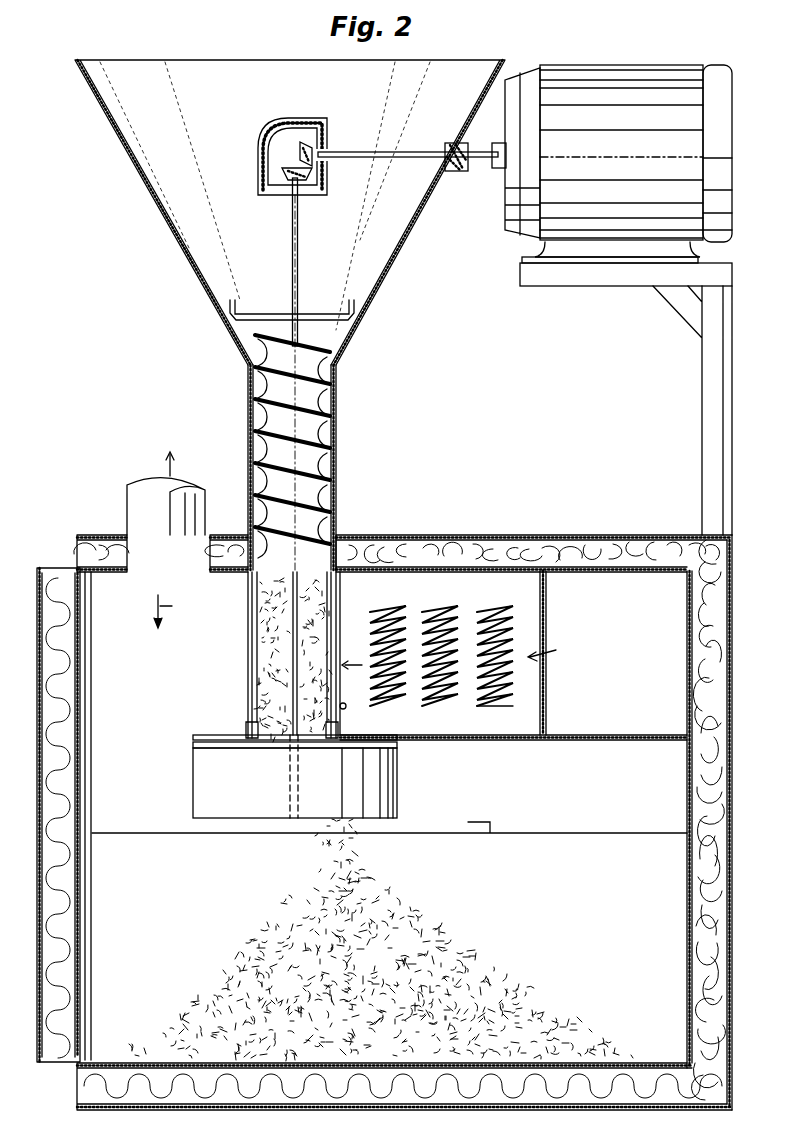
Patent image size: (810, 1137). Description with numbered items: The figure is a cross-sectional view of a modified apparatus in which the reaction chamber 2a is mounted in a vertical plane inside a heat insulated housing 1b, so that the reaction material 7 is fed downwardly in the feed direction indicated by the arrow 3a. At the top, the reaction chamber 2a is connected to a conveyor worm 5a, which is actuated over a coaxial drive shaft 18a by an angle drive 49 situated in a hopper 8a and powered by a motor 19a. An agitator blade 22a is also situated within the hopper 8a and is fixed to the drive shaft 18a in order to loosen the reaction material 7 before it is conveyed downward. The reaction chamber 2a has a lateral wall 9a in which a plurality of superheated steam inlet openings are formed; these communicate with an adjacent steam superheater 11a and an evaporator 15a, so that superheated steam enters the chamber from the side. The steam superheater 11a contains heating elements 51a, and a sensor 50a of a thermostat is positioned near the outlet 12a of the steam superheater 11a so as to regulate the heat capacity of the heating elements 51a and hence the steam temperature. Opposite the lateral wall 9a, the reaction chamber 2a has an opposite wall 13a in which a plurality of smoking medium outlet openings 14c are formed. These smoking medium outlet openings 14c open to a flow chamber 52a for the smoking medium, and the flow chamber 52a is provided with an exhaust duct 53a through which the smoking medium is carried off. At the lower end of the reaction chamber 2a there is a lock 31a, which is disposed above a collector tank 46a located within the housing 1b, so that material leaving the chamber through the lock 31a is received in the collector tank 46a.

The heat insulated housing 1b is at (494, 528).
The reaction chamber 2a is at (242, 614).
The arrow 3a is at (176, 611).
The conveyor worm 5a is at (318, 458).
The reaction material 7 is at (270, 640).
The hopper 8a is at (396, 268).
The lateral wall 9a is at (345, 652).
The steam superheater 11a is at (420, 590).
The outlet 12a is at (345, 600).
The opposite wall 13a is at (252, 698).
The smoking medium outlet openings 14c is at (252, 668).
The evaporator 15a is at (606, 590).
The coaxial drive shaft 18a is at (300, 226).
The motor 19a is at (571, 90).
The agitator blade 22a is at (311, 312).
The lock 31a is at (214, 783).
The collector tank 46a is at (140, 856).
The angle drive 49 is at (270, 118).
The sensor 50a is at (345, 709).
The heating elements 51a is at (490, 706).
The flow chamber 52a is at (118, 648).
The exhaust duct 53a is at (142, 512).